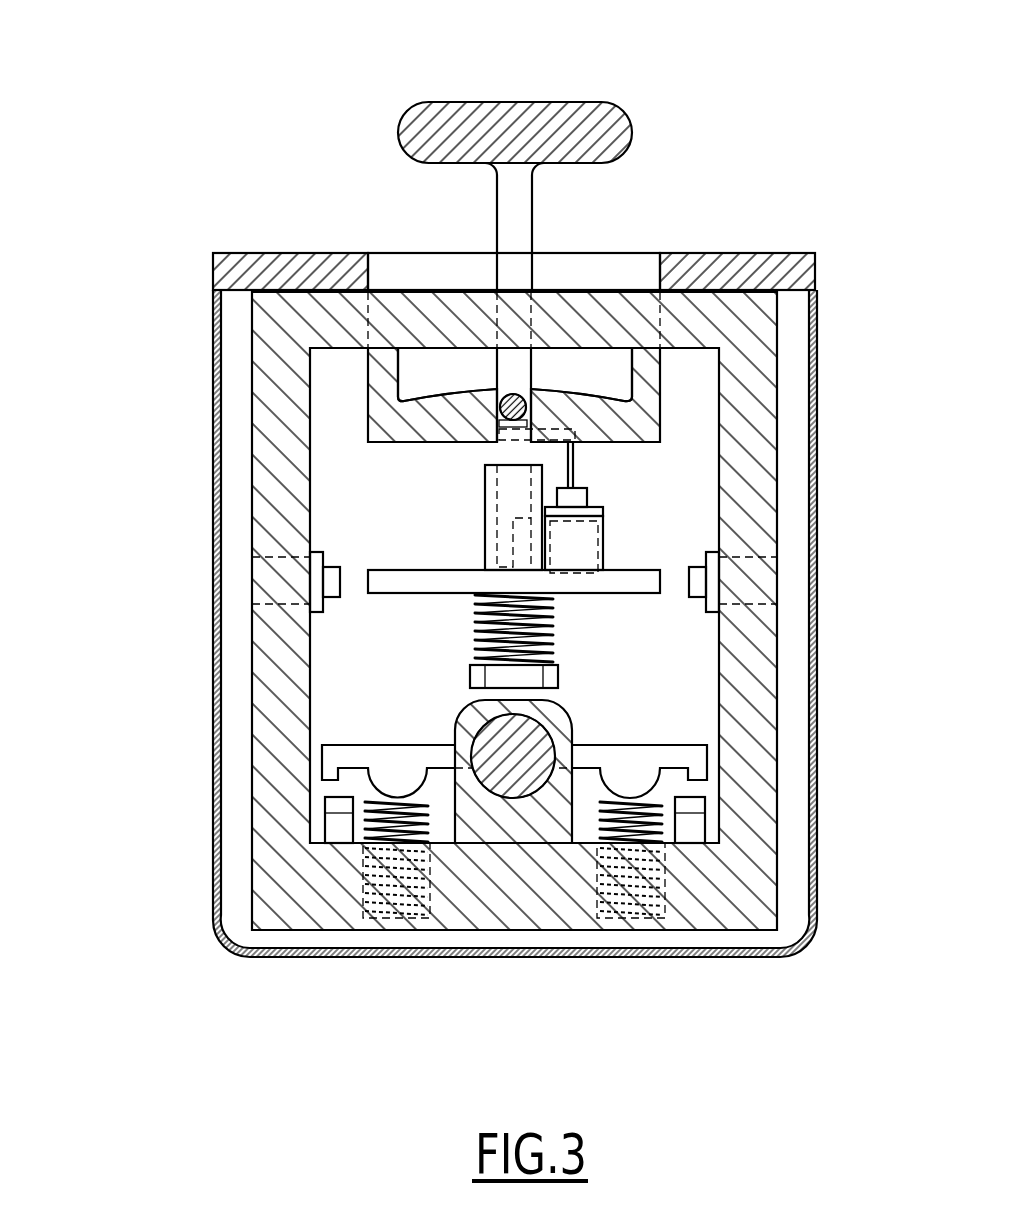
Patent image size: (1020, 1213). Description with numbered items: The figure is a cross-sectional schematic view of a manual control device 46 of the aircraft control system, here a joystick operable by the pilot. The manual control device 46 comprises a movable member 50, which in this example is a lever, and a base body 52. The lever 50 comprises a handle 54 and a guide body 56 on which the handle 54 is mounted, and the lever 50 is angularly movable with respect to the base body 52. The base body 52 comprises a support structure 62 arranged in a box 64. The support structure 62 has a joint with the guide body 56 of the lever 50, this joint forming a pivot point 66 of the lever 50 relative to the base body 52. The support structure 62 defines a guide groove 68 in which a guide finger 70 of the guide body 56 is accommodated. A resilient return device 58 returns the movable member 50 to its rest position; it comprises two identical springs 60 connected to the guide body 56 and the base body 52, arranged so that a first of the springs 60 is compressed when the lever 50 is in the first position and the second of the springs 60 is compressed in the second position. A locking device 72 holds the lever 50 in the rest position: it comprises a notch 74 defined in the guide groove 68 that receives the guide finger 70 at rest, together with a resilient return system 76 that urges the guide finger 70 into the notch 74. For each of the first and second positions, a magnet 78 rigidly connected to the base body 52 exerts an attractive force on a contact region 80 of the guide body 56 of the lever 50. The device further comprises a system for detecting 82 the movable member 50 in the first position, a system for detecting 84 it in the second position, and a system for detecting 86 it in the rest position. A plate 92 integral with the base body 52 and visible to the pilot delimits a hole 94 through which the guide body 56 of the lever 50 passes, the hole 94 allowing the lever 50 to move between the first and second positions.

The manual control device 46 is at (172, 153).
The movable member 50 is at (310, 133).
The base body 52 is at (205, 557).
The handle 54 is at (405, 98).
The guide body 56 is at (490, 236).
The resilient return device 58 is at (440, 842).
The spring 60 is at (598, 836).
The support structure 62 is at (358, 393).
The box 64 is at (210, 372).
The pivot point 66 is at (503, 748).
The guide groove 68 is at (592, 388).
The guide finger 70 is at (503, 420).
The locking device 72 is at (555, 635).
The notch 74 is at (498, 412).
The resilient return system 76 is at (514, 676).
The magnet 78 is at (728, 588).
The contact region 80 is at (648, 557).
The system for detecting the movable member in the first position 82 is at (708, 807).
The system for detecting the movable member in the second position 84 is at (320, 795).
The system for detecting the movable member in the rest position 86 is at (578, 467).
The plate 92 is at (240, 253).
The hole 94 is at (612, 265).